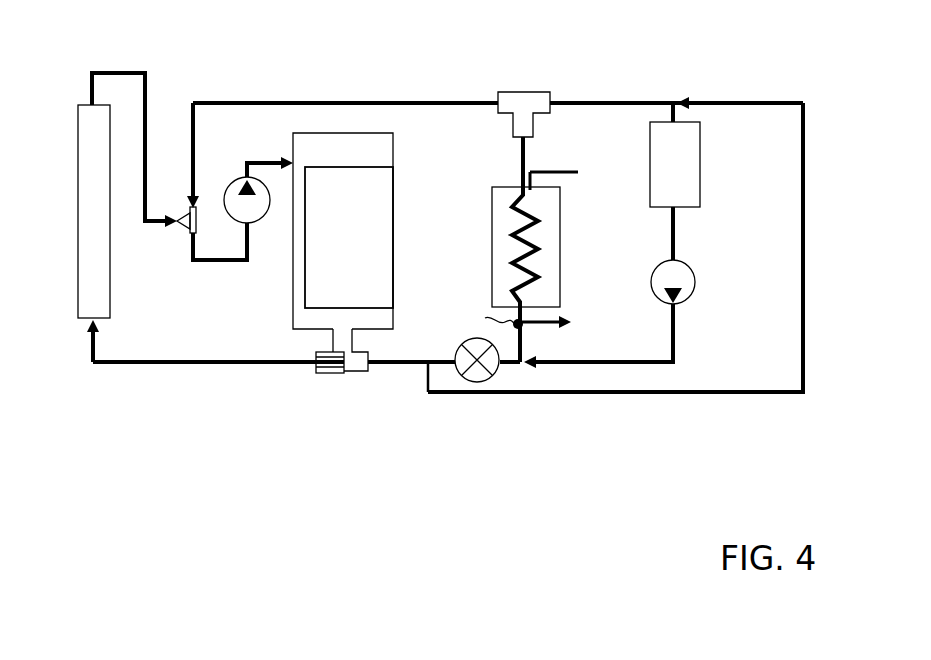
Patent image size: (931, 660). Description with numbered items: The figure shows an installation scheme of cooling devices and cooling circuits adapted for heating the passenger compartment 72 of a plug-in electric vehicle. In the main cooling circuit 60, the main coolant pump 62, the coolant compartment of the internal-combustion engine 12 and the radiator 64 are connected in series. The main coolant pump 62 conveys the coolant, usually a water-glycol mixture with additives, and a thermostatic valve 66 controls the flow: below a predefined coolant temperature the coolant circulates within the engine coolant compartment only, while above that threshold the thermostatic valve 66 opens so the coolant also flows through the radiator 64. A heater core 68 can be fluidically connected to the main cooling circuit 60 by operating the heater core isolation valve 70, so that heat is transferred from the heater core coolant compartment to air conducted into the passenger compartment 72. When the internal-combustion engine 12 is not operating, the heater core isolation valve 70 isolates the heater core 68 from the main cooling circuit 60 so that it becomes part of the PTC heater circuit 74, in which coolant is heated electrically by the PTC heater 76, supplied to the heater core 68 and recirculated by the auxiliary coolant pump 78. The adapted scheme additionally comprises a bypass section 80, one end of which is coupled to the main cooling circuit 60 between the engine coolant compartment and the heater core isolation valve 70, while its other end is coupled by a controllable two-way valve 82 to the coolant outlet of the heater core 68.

The internal-combustion engine 12 is at (302, 312).
The main cooling circuit 60 is at (148, 380).
The main coolant pump 62 is at (227, 190).
The radiator 64 is at (90, 157).
The thermostatic valve 66 is at (340, 375).
The heater core 68 is at (552, 187).
The heater core isolation valve 70 is at (470, 383).
The passenger compartment 72 is at (555, 322).
The PTC heater circuit 74 is at (623, 98).
The PTC heater 76 is at (700, 168).
The auxiliary coolant pump 78 is at (693, 278).
The bypass section 80 is at (690, 398).
The controllable 2-way valve 82 is at (522, 92).